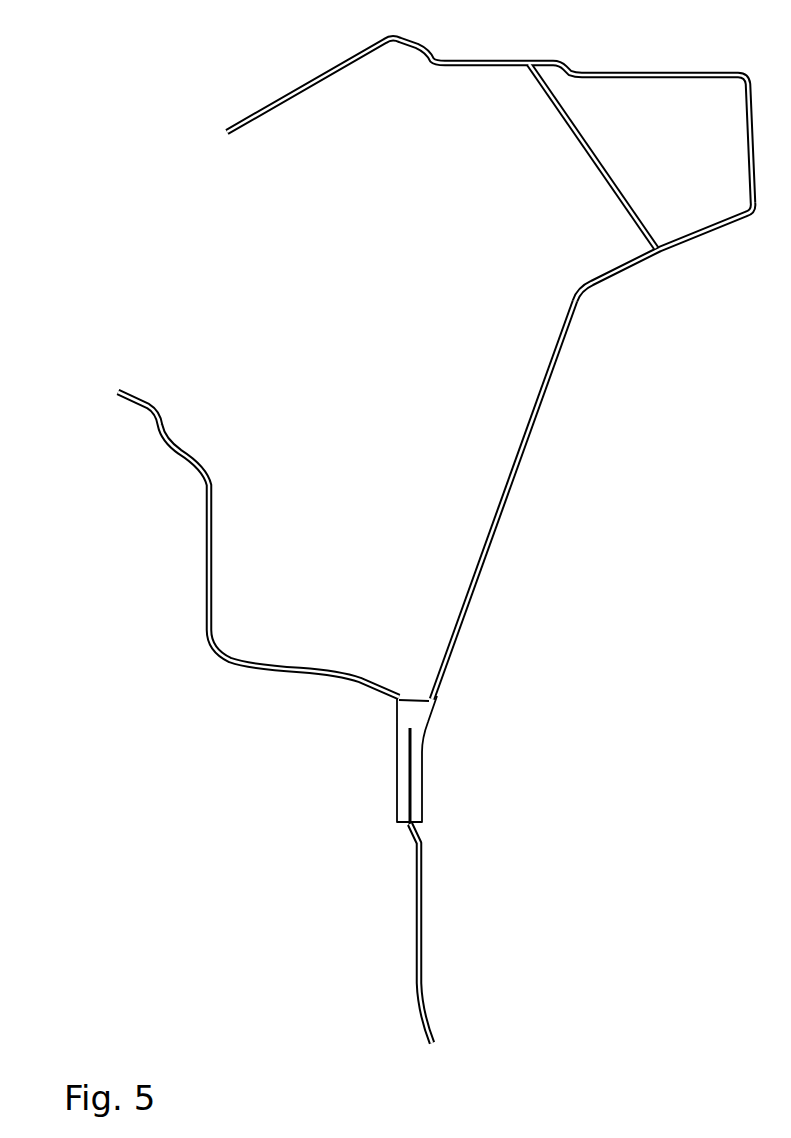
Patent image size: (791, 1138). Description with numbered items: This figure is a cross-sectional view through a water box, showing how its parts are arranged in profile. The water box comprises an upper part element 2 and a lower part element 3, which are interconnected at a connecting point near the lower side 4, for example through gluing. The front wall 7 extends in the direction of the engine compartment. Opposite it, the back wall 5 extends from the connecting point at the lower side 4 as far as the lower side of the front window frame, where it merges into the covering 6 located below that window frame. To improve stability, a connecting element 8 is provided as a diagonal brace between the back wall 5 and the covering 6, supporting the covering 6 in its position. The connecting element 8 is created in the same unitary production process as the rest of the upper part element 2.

The upper part element 2 is at (396, 527).
The lower part element 3 is at (423, 952).
The lower side 4 is at (422, 769).
The back wall 5 is at (558, 357).
The covering 6 is at (279, 100).
The front wall 7 is at (207, 553).
The connecting element 8 is at (580, 145).